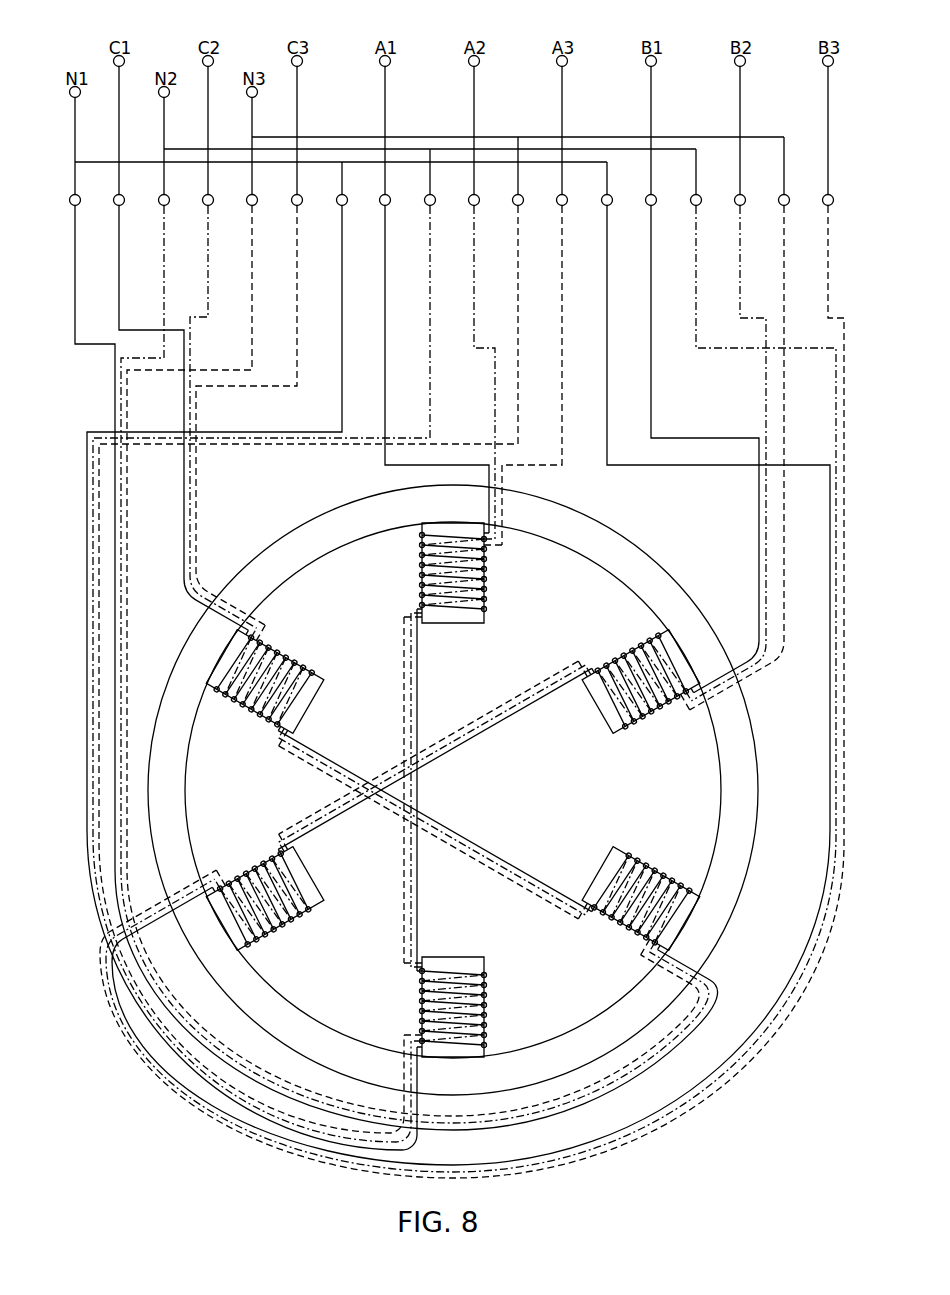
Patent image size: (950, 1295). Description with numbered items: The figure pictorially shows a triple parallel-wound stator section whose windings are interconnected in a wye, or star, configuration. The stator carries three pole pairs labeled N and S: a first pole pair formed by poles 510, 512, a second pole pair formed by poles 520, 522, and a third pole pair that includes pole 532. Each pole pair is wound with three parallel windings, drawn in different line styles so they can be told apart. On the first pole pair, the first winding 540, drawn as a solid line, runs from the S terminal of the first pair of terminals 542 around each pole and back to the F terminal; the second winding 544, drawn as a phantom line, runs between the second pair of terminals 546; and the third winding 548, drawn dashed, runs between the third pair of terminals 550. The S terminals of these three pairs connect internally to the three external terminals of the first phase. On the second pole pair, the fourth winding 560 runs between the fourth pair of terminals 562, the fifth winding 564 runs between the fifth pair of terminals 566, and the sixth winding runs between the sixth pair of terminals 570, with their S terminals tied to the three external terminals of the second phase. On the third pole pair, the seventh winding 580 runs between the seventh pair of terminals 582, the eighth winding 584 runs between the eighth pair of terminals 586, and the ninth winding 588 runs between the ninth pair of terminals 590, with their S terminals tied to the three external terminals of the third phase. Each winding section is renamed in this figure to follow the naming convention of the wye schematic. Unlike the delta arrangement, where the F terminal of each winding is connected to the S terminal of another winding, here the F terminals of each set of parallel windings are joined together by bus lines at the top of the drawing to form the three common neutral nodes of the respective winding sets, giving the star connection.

The pole of first pole pair 510 is at (472, 580).
The pole of first pole pair 512 is at (478, 1008).
The pole of second pole pair 520 is at (632, 656).
The pole of second pole pair 522 is at (281, 922).
The pole of third pole pair 532 is at (672, 882).
The first winding 540 is at (342, 345).
The first pair of terminals 542 is at (377, 222).
The second winding 544 is at (474, 332).
The second pair of terminals 546 is at (465, 222).
The third winding 548 is at (562, 345).
The third pair of terminals 550 is at (553, 222).
The fourth winding 560 is at (607, 390).
The fourth pair of terminals 562 is at (642, 222).
The fifth winding 564 is at (696, 330).
The fifth pair of terminals 566 is at (731, 222).
The sixth pair of terminals 570 is at (819, 222).
The seventh winding 580 is at (114, 402).
The seventh pair of terminals 582 is at (110, 222).
The eighth winding 584 is at (163, 328).
The eighth pair of terminals 586 is at (199, 222).
The ninth winding 588 is at (252, 362).
The ninth pair of terminals 590 is at (287, 222).